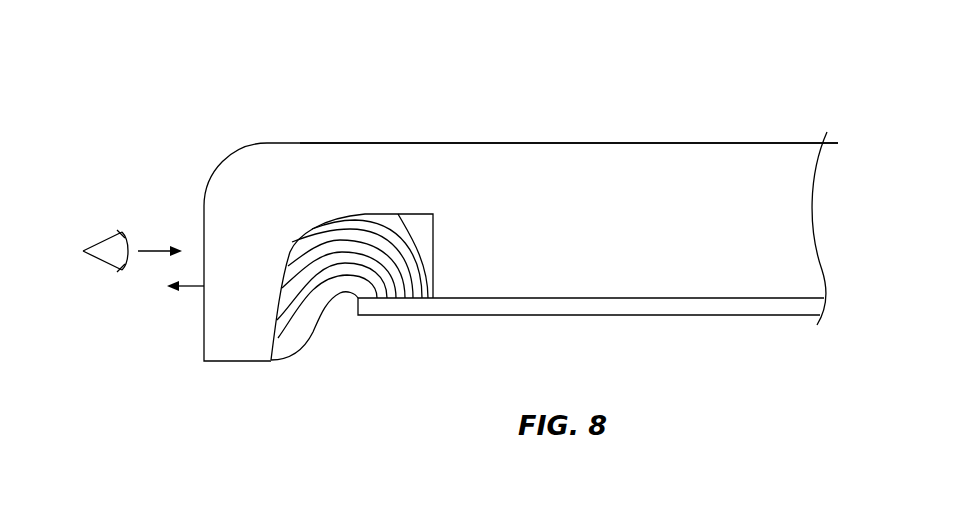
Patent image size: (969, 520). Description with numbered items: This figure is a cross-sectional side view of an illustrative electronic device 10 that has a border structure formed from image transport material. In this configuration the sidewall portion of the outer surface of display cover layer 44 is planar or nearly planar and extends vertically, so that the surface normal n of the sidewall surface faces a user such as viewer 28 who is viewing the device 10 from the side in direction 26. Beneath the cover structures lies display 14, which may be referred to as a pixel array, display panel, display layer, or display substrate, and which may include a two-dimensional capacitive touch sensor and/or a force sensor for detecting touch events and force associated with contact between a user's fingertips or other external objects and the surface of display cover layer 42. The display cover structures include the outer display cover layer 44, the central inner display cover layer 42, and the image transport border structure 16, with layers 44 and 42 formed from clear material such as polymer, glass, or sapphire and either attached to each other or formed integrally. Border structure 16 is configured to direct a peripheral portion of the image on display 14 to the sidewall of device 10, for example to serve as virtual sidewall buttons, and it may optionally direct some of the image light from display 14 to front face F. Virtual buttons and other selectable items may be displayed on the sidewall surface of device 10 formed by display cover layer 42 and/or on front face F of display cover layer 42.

The electronic device 10 is at (759, 66).
The display 14 is at (621, 300).
The image transport border structure 16 is at (312, 378).
The direction 26 is at (150, 257).
The viewer 28 is at (103, 236).
The inner display cover layer 42 is at (802, 263).
The outer display cover layer 44 is at (648, 153).
The front face F is at (524, 113).
The surface normal n is at (185, 297).